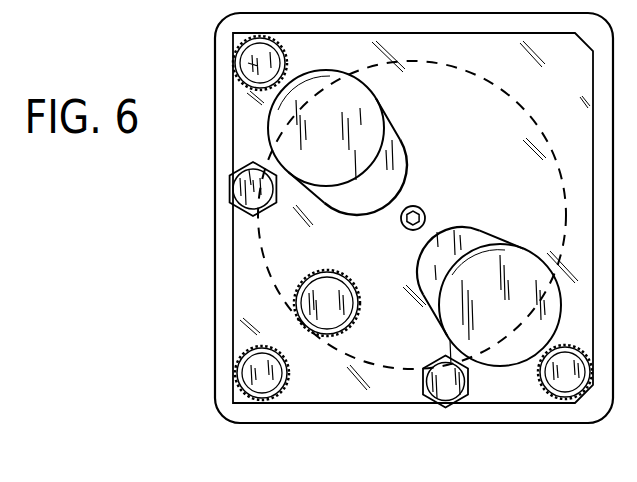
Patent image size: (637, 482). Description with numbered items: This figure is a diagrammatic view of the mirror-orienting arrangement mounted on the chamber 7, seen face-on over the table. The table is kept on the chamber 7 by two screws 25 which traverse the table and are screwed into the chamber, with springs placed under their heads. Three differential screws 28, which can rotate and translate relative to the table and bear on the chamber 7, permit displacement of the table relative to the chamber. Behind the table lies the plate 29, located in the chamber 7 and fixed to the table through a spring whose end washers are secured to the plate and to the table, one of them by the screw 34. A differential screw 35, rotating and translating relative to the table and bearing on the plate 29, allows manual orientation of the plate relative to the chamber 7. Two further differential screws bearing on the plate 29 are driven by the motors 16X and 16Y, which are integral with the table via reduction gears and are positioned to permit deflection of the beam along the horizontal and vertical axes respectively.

The chamber 7 is at (226, 240).
The motor 16X is at (362, 132).
The motor 16Y is at (513, 270).
The screws 25 is at (240, 190).
The differential screws 28 is at (255, 68).
The plate 29 is at (373, 372).
The screw 34 is at (423, 205).
The differential screw 35 is at (333, 297).